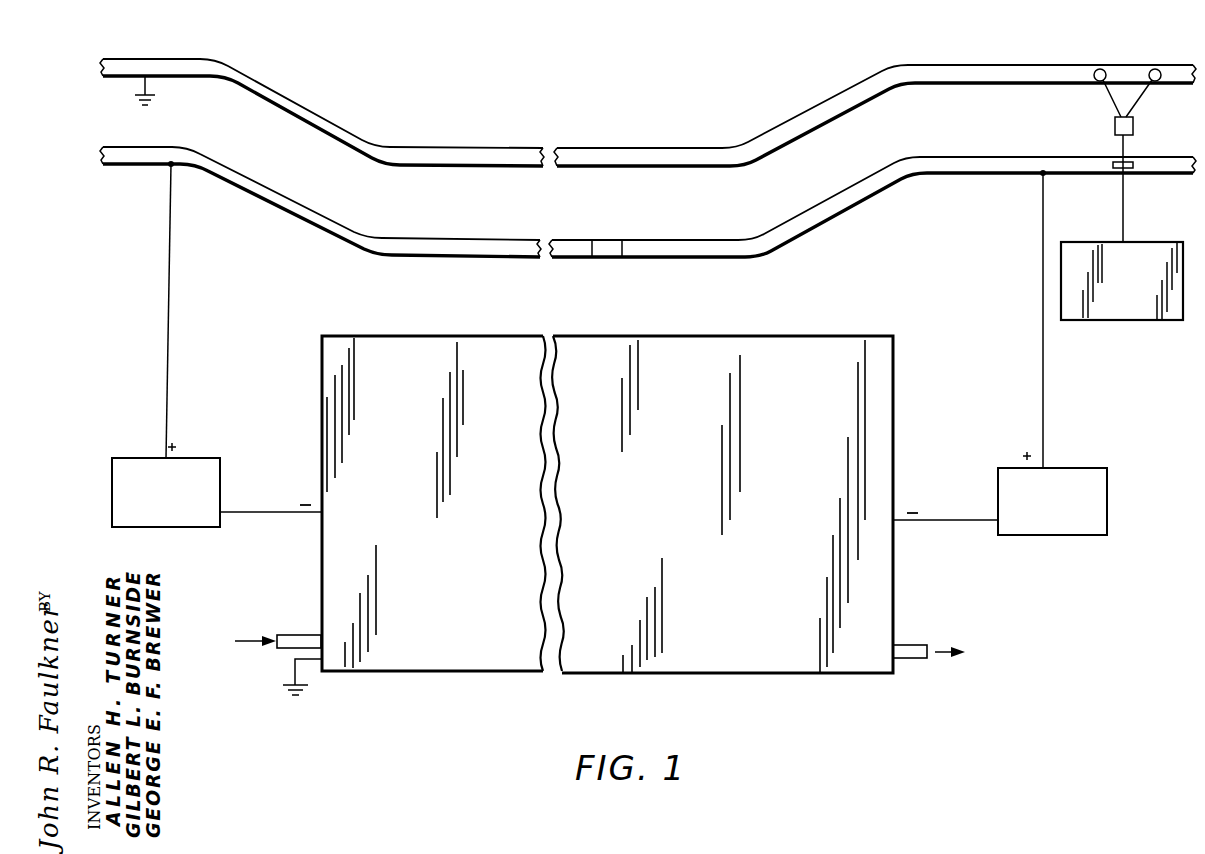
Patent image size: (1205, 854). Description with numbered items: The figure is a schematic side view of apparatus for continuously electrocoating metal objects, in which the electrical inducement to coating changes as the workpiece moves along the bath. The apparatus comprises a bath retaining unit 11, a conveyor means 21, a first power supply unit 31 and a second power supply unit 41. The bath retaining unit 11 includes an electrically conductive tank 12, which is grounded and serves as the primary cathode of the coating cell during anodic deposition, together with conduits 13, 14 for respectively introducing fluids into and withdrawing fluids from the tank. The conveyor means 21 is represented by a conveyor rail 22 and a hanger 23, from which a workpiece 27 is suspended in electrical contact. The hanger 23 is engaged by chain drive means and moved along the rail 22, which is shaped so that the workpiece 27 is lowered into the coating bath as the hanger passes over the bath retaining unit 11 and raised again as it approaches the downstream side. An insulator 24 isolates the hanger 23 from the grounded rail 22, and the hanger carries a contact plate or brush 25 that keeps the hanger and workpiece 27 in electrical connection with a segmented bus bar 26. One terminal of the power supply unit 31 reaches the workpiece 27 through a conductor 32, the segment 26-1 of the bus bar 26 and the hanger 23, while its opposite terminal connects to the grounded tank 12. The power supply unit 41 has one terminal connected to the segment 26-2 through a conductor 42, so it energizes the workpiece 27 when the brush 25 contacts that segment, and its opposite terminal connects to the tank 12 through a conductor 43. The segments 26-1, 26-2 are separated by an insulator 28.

The bath retaining unit 11 is at (906, 562).
The electrically conductive tank 12 is at (896, 393).
The conduit 13 is at (295, 635).
The conduit 14 is at (905, 645).
The conveyor means 21 is at (730, 100).
The conveyor rail 22 is at (571, 148).
The hanger 23 is at (1140, 100).
The insulator 24 is at (1113, 126).
The contact plate or brush 25 is at (1113, 170).
The segmented bus bar 26 is at (648, 202).
The segment of bus bar 26-1 is at (663, 240).
The segment of bus bar 26-2 is at (405, 238).
The workpiece 27 is at (1114, 322).
The insulator 28 is at (611, 247).
The first power supply unit 31 is at (1120, 492).
The conductor 32 is at (1045, 398).
The second power supply unit 41 is at (96, 477).
The conductor 42 is at (167, 282).
The conductor 43 is at (257, 512).